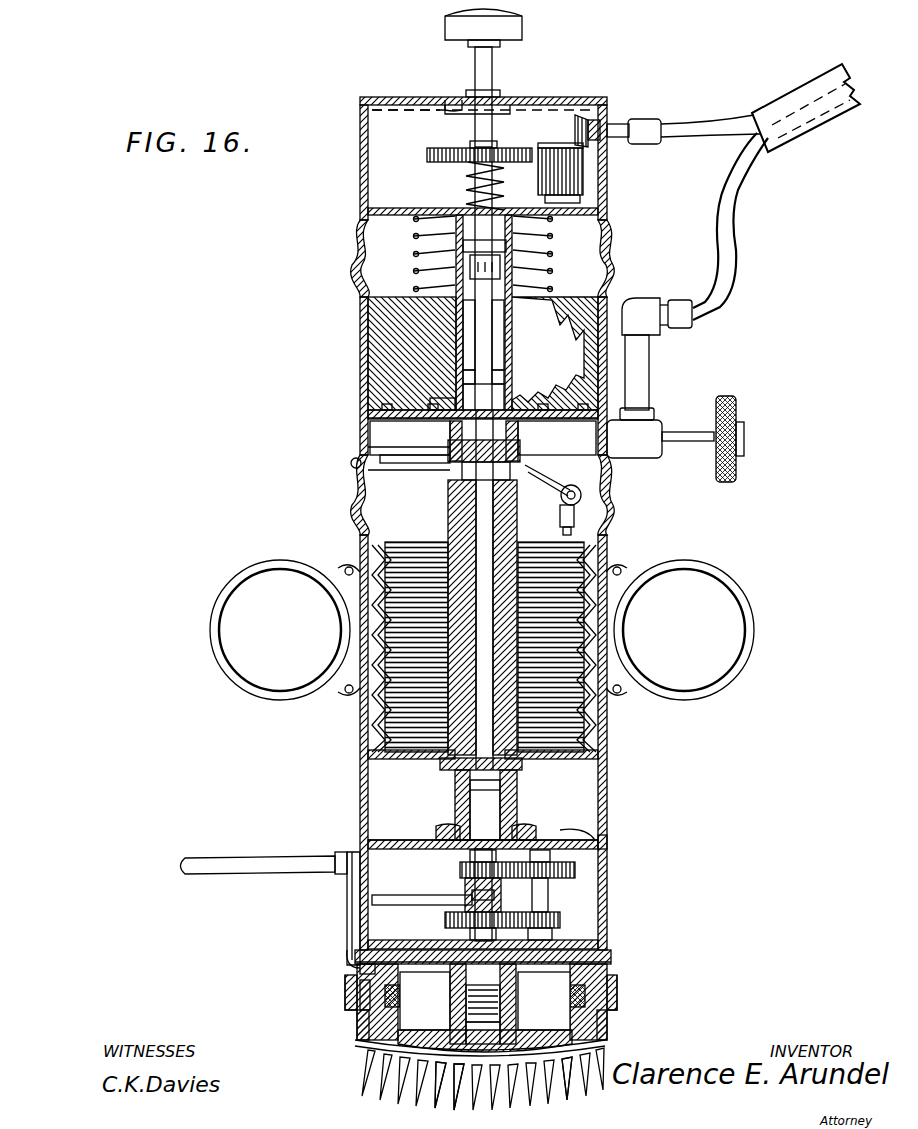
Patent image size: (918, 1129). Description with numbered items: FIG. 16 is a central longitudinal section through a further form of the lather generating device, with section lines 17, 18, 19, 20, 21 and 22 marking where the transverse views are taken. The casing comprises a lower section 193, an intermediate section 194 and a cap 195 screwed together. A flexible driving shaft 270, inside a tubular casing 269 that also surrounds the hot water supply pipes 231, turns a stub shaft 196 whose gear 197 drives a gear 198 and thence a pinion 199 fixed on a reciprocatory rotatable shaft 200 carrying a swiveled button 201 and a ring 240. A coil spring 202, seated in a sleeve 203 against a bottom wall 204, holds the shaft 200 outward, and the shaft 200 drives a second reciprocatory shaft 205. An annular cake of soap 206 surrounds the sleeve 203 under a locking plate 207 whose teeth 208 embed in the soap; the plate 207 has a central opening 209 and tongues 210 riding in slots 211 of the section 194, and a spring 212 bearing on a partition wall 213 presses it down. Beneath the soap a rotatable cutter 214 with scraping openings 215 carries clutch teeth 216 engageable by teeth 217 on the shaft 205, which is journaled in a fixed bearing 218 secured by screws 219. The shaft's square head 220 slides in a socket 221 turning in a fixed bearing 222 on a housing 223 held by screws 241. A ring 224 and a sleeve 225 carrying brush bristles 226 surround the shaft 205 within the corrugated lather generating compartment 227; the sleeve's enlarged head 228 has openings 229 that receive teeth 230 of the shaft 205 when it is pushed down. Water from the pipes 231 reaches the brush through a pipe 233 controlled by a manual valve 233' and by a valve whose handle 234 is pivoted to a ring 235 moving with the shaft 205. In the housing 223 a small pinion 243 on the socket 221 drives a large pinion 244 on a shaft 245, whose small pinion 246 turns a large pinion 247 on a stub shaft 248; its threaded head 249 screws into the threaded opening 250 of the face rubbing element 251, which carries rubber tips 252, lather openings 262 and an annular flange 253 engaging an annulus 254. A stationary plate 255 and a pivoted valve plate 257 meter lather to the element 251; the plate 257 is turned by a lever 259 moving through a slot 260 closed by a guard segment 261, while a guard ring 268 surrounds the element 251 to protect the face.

The section line 17— 17 is at (366, 421).
The section line 18— 18 is at (240, 450).
The section line 19— 19 is at (240, 475).
The section line 20— 20 is at (300, 835).
The section line 21— 21 is at (368, 110).
The section line 22— 22 is at (460, 871).
The lower casing section 193 is at (590, 821).
The intermediate casing section 194 is at (650, 386).
The upper section or cap 195 is at (604, 160).
The stub shaft 196 is at (620, 128).
The gear 197 is at (580, 114).
The gear 198 is at (585, 185).
The pinion 199 is at (440, 157).
The reciprocatory rotatable shaft 200 is at (494, 62).
The swiveled button 201 is at (524, 30).
The compressible coil spring 202 is at (462, 196).
The sleeve or tube 203 is at (560, 247).
The bottom wall 204 is at (362, 254).
The reciprocatory rotatable shaft 205 is at (456, 356).
The cake of soap 206 is at (660, 344).
The locking plate or disk 207 is at (360, 278).
The downwardly extending teeth 208 is at (578, 300).
The central opening 209 is at (462, 330).
The tongues 210 is at (400, 312).
The vertical slots 211 is at (462, 376).
The compressible coil spring 212 is at (410, 235).
The partition wall 213 is at (388, 231).
The rotatable cutter 214 is at (378, 441).
The openings 215 is at (370, 456).
The upstanding teeth 216 is at (650, 403).
The teeth 217 is at (445, 398).
The fixed support or bearing 218 is at (452, 433).
The screws 219 is at (352, 465).
The head 220 is at (452, 789).
The socket 221 is at (452, 807).
The fixed bearing 222 is at (452, 827).
The housing 223 is at (608, 841).
The ring 224 is at (438, 765).
The sleeve or tube 225 is at (372, 541).
The bristles 226 is at (565, 580).
The lather generating compartment 227 is at (612, 633).
The enlarged head 228 is at (470, 513).
The openings 229 is at (452, 491).
The teeth 230 is at (464, 471).
The hot water supply pipes 231 is at (748, 255).
The pipe 233 is at (624, 492).
The manually operated valve 233' is at (738, 439).
The valve handle or lever 234 is at (551, 522).
The ring 235 is at (551, 441).
The ring 240 is at (448, 98).
The screws 241 is at (560, 885).
The small pinion 243 is at (398, 843).
The large pinion 244 is at (578, 871).
The shaft 245 is at (562, 921).
The small pinion 246 is at (552, 933).
The large pinion 247 is at (470, 909).
The vertical stub shaft 248 is at (372, 899).
The screw-threaded head 249 is at (458, 1070).
The screw-threaded opening 250 is at (568, 1066).
The rotatable face rubbing element 251 is at (370, 1062).
The teeth or tips 252 is at (398, 1060).
The upstanding annular flange 253 is at (360, 1016).
The annulus 254 is at (580, 983).
The stationary plate 255 is at (350, 960).
The pivoted valve plate 257 is at (360, 971).
The lever 259 is at (192, 875).
The slot 260 is at (345, 946).
The guard segment 261 is at (618, 976).
The openings 262 is at (380, 1100).
The guard ring 268 is at (604, 1045).
The tubular casing 269 is at (832, 116).
The flexible driving shaft 270 is at (720, 114).